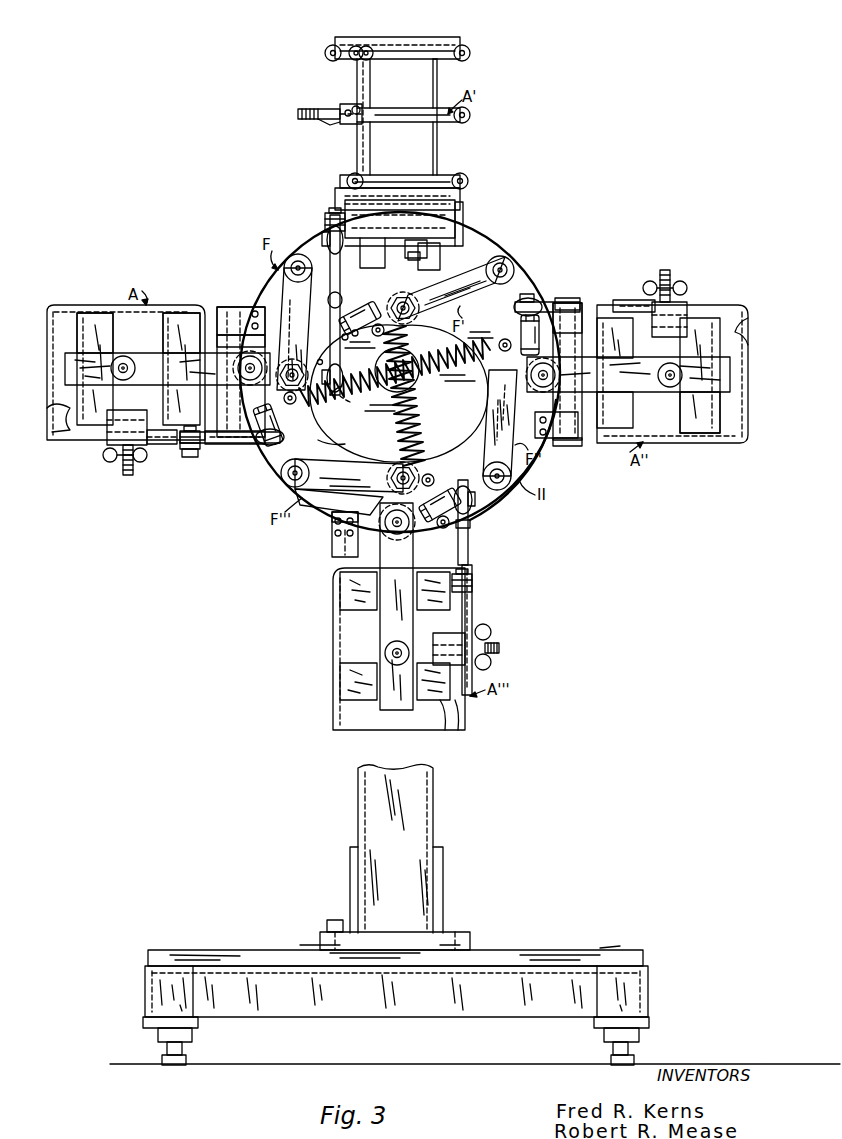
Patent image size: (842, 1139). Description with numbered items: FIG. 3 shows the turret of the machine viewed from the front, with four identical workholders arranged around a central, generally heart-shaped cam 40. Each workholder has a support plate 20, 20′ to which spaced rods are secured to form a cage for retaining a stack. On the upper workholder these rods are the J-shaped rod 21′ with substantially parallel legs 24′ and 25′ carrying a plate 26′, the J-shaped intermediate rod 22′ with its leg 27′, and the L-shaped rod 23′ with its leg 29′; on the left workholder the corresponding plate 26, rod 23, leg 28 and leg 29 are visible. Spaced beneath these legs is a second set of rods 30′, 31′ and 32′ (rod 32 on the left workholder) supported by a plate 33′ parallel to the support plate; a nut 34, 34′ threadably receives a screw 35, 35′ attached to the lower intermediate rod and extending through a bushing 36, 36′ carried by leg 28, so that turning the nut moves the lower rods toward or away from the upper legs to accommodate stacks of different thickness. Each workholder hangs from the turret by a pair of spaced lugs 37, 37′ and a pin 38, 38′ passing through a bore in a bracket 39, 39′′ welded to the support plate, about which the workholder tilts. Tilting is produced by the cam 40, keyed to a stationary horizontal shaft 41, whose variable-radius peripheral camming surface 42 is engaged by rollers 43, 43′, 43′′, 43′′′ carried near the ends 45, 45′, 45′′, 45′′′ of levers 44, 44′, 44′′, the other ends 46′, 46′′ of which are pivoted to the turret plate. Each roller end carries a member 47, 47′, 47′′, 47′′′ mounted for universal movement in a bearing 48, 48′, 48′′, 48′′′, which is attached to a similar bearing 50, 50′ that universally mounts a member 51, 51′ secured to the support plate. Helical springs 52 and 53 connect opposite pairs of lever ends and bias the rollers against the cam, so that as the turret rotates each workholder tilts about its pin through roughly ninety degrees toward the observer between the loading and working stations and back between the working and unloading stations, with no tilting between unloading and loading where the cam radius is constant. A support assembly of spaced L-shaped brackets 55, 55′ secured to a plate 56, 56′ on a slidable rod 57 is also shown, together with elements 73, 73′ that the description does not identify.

The support plate 20 is at (226, 313).
The support plate 20′ is at (438, 158).
The rod 21′ is at (385, 62).
The intermediate rod 22′ is at (385, 122).
The rod 23 is at (190, 313).
The rod 23′ is at (393, 175).
The leg 24′ is at (470, 53).
The leg 25′ is at (325, 53).
The plate 26 is at (47, 340).
The plate 26′ is at (388, 38).
The leg 27′ is at (470, 115).
The leg 28 is at (160, 445).
The leg 29 is at (88, 313).
The leg 29′ is at (470, 180).
The rod 30′ is at (354, 60).
The intermediate rod 31′ is at (360, 108).
The rod 32 is at (62, 424).
The rod 32′ is at (350, 178).
The plate 33′ is at (352, 140).
The nut 34 is at (104, 459).
The nut 34′ is at (318, 122).
The screw 35 is at (125, 473).
The screw 35′ is at (300, 113).
The bushing 36 is at (107, 440).
The bushing 36′ is at (343, 104).
The lugs 37 is at (246, 292).
The lugs 37′ is at (465, 224).
The pin 38 is at (231, 306).
The pin 38′ is at (462, 202).
The bracket 39 is at (308, 322).
The bracket 39′′ is at (520, 421).
The cam 40 is at (350, 344).
The stationary shaft 41 is at (419, 385).
The peripheral camming surface 42 is at (330, 440).
The roller 43 is at (318, 374).
The roller 43′ is at (455, 288).
The roller 43′′ is at (455, 375).
The roller 43′′′ is at (397, 430).
The lever 44 is at (312, 293).
The lever 44′ is at (482, 263).
The lever 44′′ is at (480, 470).
The end of lever 45 is at (294, 404).
The end of lever 45′ is at (403, 296).
The end of lever 45′′ is at (505, 338).
The end of lever 45′′′ is at (435, 480).
The other end of lever 46′ is at (508, 254).
The other end of lever 46′′ is at (519, 496).
The member 47 is at (263, 447).
The member 47′ is at (368, 307).
The member 47′′ is at (534, 312).
The member 47′′′ is at (433, 515).
The bearing 48 is at (282, 445).
The bearing 48′ is at (340, 292).
The bearing 48′′ is at (545, 302).
The bearing 48′′′ is at (468, 528).
The bearing 50 is at (190, 450).
The bearing 50′ is at (332, 213).
The member 51 is at (197, 457).
The member 51′ is at (326, 232).
The helical spring 52 is at (420, 440).
The helical spring 53 is at (336, 395).
The L-shaped brackets 55 is at (163, 338).
The L-shaped brackets 55′ is at (393, 240).
The plate 56 is at (65, 377).
The plate 56′ is at (420, 241).
The rod 57 is at (237, 368).
The roller 73 is at (135, 368).
The roller 73′ is at (420, 258).